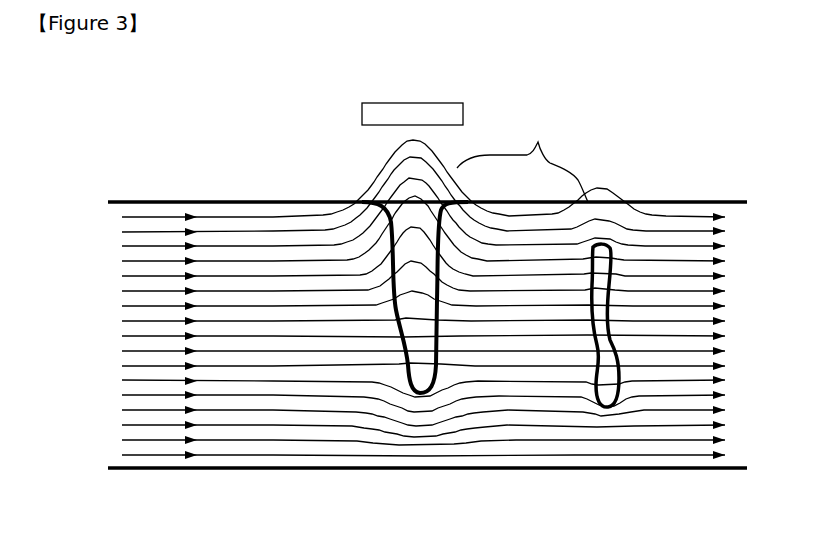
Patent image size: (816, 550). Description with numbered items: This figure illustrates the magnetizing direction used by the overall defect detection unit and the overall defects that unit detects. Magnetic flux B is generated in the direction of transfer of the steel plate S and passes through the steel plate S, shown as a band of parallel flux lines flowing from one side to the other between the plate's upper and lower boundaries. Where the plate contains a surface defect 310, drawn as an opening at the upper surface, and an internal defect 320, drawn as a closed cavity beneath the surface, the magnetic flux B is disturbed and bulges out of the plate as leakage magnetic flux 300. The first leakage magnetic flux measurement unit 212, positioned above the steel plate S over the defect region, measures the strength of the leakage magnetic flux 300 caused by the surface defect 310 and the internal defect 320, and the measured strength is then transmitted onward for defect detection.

The first leakage magnetic flux measurement unit 212 is at (435, 103).
The leakage magnetic flux 300 is at (522, 157).
The surface defect 310 is at (395, 369).
The internal defect 320 is at (586, 368).
The magnetic flux B is at (163, 220).
The steel plate S is at (250, 202).